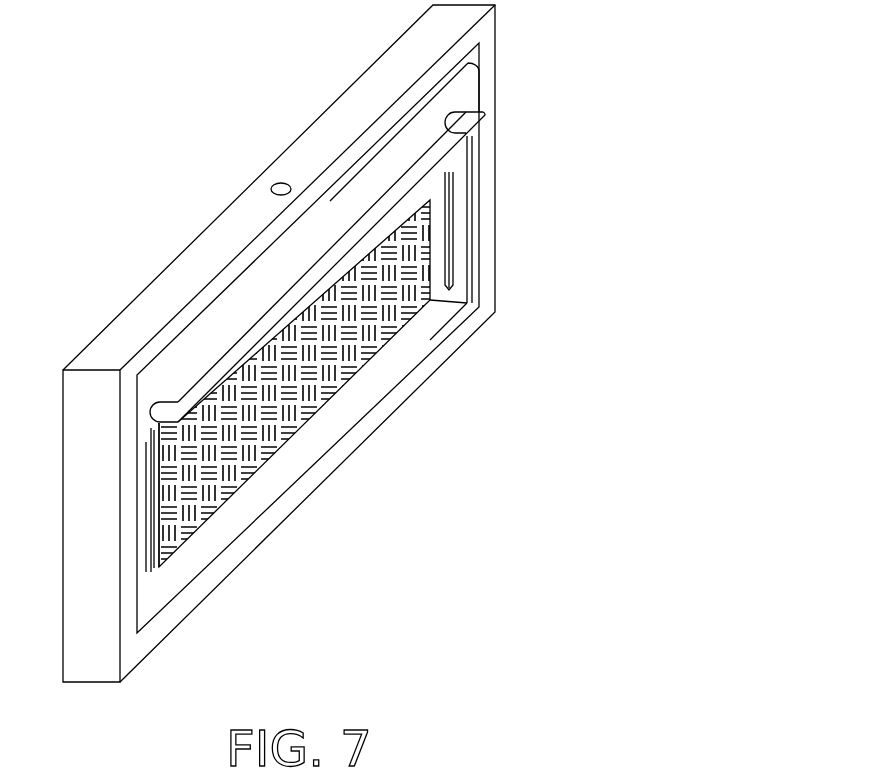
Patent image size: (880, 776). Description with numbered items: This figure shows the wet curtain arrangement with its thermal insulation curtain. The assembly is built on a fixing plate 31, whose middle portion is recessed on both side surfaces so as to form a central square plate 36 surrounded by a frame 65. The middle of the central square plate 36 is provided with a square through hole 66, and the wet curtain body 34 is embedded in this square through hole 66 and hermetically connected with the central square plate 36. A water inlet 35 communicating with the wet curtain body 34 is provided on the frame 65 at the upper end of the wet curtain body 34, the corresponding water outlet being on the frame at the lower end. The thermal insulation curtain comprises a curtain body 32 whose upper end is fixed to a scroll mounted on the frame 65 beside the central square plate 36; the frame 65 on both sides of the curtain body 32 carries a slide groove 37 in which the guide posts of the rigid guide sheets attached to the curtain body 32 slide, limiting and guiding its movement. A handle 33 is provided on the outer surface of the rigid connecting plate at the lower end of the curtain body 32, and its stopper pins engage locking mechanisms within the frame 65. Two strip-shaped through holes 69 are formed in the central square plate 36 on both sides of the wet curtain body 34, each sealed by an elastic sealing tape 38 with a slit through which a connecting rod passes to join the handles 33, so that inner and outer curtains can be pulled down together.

The fixing plate 31 is at (63, 433).
The curtain body 32 is at (160, 380).
The handle 33 is at (268, 330).
The wet curtain body 34 is at (322, 298).
The water inlet 35 is at (276, 184).
The central square plate 36 is at (437, 260).
The slide groove 37 is at (452, 262).
The sealing tape 38 is at (475, 260).
The frame 65 is at (413, 272).
The square through hole 66 is at (160, 538).
The strip-shaped through hole 69 is at (148, 503).